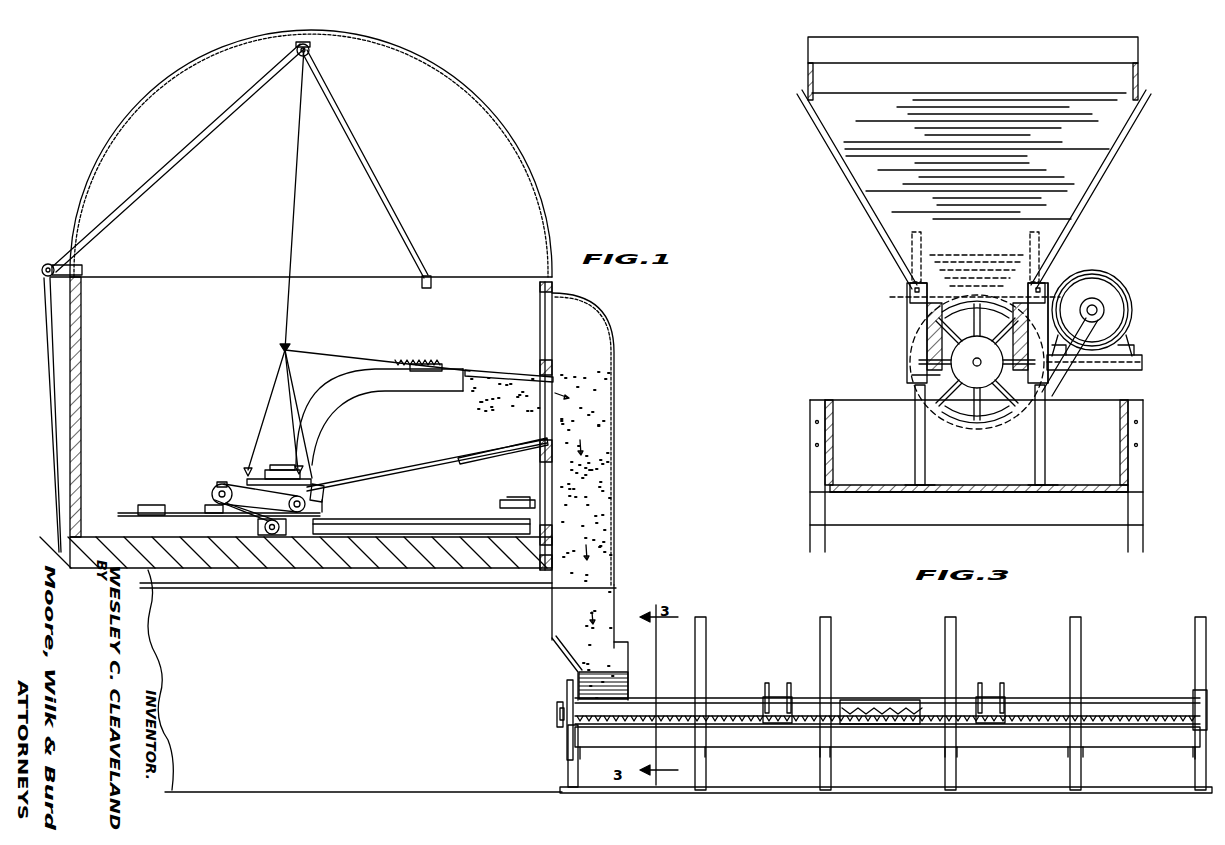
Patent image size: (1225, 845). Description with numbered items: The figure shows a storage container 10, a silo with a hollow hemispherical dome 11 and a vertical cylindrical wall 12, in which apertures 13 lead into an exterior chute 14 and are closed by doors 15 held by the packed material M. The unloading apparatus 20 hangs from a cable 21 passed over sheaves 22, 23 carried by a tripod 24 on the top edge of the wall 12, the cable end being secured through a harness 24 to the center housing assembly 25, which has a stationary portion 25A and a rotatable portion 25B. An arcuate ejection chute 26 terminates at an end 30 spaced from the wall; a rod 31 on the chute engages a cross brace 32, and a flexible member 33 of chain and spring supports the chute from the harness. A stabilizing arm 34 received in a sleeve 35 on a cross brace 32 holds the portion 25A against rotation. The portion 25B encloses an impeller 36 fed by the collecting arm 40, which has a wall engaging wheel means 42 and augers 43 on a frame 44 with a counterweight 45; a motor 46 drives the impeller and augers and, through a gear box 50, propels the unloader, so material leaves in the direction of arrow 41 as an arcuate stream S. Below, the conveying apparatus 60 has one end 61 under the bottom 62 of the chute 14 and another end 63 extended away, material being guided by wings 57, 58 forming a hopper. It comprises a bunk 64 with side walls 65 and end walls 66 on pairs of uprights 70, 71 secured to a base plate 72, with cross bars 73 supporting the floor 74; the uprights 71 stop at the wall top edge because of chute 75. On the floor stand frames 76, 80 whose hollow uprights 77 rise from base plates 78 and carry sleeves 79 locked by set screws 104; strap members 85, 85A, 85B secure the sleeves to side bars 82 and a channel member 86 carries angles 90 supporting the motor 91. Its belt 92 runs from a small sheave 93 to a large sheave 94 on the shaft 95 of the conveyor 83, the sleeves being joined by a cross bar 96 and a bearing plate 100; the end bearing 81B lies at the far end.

In FIG. 1, the structural storage container 10 is at (90, 417).
In FIG. 1, the hollow hemispherical dome 11 is at (517, 154).
In FIG. 1, the vertical cylindrical wall 12 is at (83, 353).
In FIG. 1, the apertures 13 is at (554, 332).
In FIG. 1, the exterior chute 14 is at (617, 352).
In FIG. 3, the exterior chute 14 is at (822, 47).
In FIG. 1, the doors 15 is at (540, 488).
In FIG. 1, the unloading apparatus 20 is at (420, 395).
In FIG. 1, the flexible cable suspending means 21 is at (294, 222).
In FIG. 1, the sheave 22 is at (300, 60).
In FIG. 1, the sheave 23 is at (46, 262).
In FIG. 1, the tripod / harness 24 is at (382, 174).
In FIG. 1, the center housing assembly 25 is at (320, 495).
In FIG. 1, the stationary portion of center housing 25A is at (290, 468).
In FIG. 1, the rotatable portion of center housing 25B is at (326, 502).
In FIG. 1, the arcuate ejection chute 26 is at (345, 388).
In FIG. 1, the end of ejection chute 30 is at (470, 372).
In FIG. 1, the rod 31 is at (523, 374).
In FIG. 1, the cross braces 32 is at (553, 370).
In FIG. 1, the flexible member 33 is at (399, 360).
In FIG. 1, the stabilizing arm 34 is at (425, 466).
In FIG. 1, the sleeve 35 is at (490, 449).
In FIG. 1, the impeller 36 is at (318, 488).
In FIG. 1, the collecting arm 40 is at (441, 520).
In FIG. 1, the arrow 41 is at (478, 384).
In FIG. 1, the wall engaging wheel means 42 is at (509, 502).
In FIG. 1, the augers 43 is at (344, 550).
In FIG. 1, the frame 44 is at (212, 505).
In FIG. 1, the counterweight 45 is at (152, 503).
In FIG. 1, the motor 46 is at (220, 483).
In FIG. 1, the gear box 50 is at (258, 528).
In FIG. 1, the arcuate stream S is at (598, 425).
In FIG. 1, the material M is at (386, 561).
In FIG. 1, the wing 57 is at (556, 656).
In FIG. 3, the wing 57 is at (969, 156).
In FIG. 1, the wing 58 is at (630, 650).
In FIG. 3, the wing 58 is at (835, 150).
In FIG. 1, the conveying apparatus 60 is at (1094, 694).
In FIG. 1, the end of conveying apparatus 61 is at (566, 673).
In FIG. 1, the bottom of exterior chute 62 is at (618, 632).
In FIG. 3, the bottom of exterior chute 62 is at (806, 72).
In FIG. 1, the other end of conveying apparatus 63 is at (1208, 618).
In FIG. 1, the bunk 64 is at (1016, 750).
In FIG. 3, the bunk 64 is at (822, 398).
In FIG. 1, the side walls 65 is at (866, 740).
In FIG. 3, the side walls 65 is at (824, 444).
In FIG. 1, the end walls 66 is at (574, 740).
In FIG. 1, the uprights 70 is at (707, 637).
In FIG. 1, the uprights 71 is at (569, 772).
In FIG. 3, the uprights 71 is at (812, 537).
In FIG. 1, the base plate or frame member 72 is at (920, 788).
In FIG. 1, the cross bars 73 is at (1072, 752).
In FIG. 3, the cross bars 73 is at (1078, 520).
In FIG. 1, the floor 74 is at (896, 746).
In FIG. 3, the floor 74 is at (1006, 494).
In FIG. 3, the chute 75 is at (1142, 123).
In FIG. 1, the frame 76 is at (565, 697).
In FIG. 3, the uprights 77 is at (915, 444).
In FIG. 3, the base plate 78 is at (985, 484).
In FIG. 3, the sleeve 79 is at (907, 314).
In FIG. 1, the frames 80 is at (778, 690).
In FIG. 1, the end bearing 81B is at (1190, 668).
In FIG. 1, the side plates or bars 82 is at (676, 705).
In FIG. 3, the side plates or bars 82 is at (927, 336).
In FIG. 1, the conveyor 83 is at (888, 700).
In FIG. 3, the conveyor 83 is at (984, 386).
In FIG. 1, the strap members 85 is at (586, 713).
In FIG. 3, the strap members 85 is at (927, 305).
In FIG. 1, the double-ended flange members 85A is at (763, 700).
In FIG. 1, the members 85B is at (1192, 698).
In FIG. 3, the channel member 86 is at (1040, 312).
In FIG. 3, the angles 90 is at (1146, 360).
In FIG. 3, the motor 91 is at (1122, 292).
In FIG. 1, the belt 92 is at (556, 712).
In FIG. 3, the belt 92 is at (1052, 378).
In FIG. 3, the sheave 93 is at (1096, 300).
In FIG. 1, the sheave 94 is at (557, 724).
In FIG. 3, the sheave 94 is at (946, 423).
In FIG. 3, the shaft 95 is at (975, 360).
In FIG. 3, the tubular cross bar 96 is at (955, 280).
In FIG. 3, the bearing plate 100 is at (912, 376).
In FIG. 3, the set screw 104 is at (908, 288).